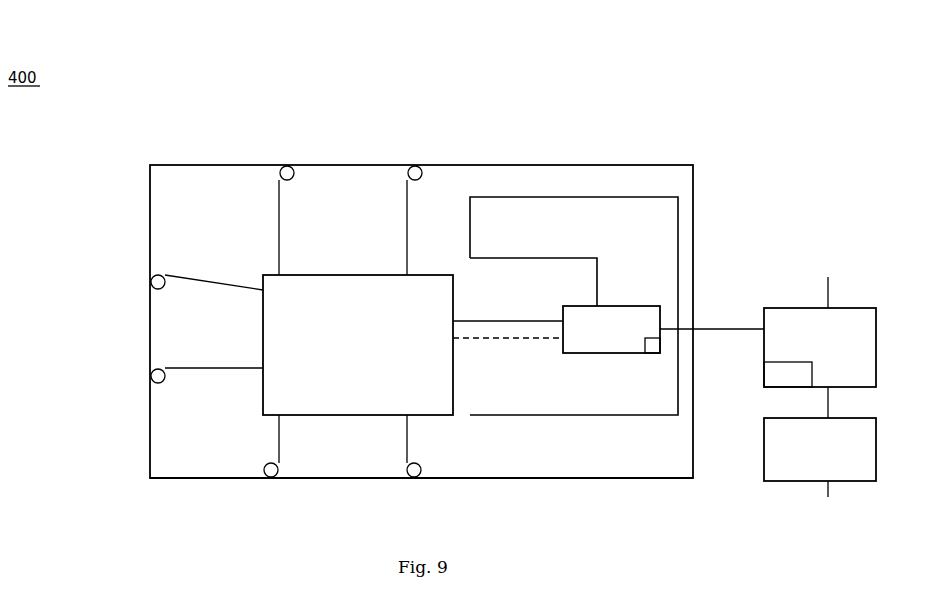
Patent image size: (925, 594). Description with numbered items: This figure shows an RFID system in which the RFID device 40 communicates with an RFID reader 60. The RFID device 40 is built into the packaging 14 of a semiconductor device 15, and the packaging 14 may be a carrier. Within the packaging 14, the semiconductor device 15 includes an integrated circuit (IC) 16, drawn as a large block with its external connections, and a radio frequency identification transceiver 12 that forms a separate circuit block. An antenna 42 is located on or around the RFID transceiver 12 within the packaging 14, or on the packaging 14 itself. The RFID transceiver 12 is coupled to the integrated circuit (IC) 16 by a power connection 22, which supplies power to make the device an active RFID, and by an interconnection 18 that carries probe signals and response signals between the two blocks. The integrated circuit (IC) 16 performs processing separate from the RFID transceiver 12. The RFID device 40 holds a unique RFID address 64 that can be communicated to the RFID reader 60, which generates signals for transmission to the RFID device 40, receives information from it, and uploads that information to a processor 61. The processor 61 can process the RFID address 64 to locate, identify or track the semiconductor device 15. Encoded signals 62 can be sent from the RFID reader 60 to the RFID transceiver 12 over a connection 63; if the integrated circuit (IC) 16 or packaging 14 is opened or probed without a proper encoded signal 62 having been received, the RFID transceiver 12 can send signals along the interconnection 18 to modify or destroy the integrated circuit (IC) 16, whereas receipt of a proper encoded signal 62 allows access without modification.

The RFID device 40 is at (188, 148).
The packaging 14 is at (620, 463).
The semiconductor device 15 is at (550, 483).
The integrated circuit (IC) 16 is at (326, 415).
The antenna 42 is at (678, 212).
The RFID transceiver 12 is at (661, 322).
The power connection 22 is at (477, 323).
The interconnection 18 is at (523, 338).
The RFID address 64 is at (652, 353).
The connection 63 is at (720, 329).
The RFID reader 60 is at (820, 321).
The encoded signals 62 is at (788, 374).
The processor 61 is at (820, 455).